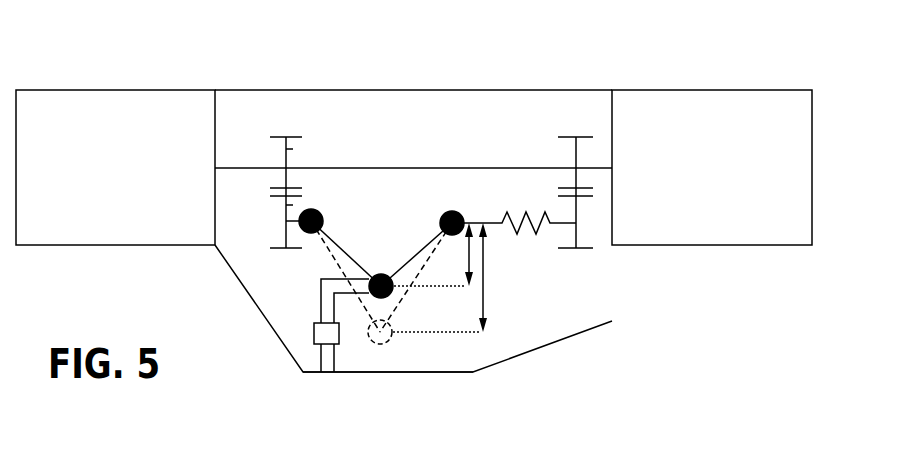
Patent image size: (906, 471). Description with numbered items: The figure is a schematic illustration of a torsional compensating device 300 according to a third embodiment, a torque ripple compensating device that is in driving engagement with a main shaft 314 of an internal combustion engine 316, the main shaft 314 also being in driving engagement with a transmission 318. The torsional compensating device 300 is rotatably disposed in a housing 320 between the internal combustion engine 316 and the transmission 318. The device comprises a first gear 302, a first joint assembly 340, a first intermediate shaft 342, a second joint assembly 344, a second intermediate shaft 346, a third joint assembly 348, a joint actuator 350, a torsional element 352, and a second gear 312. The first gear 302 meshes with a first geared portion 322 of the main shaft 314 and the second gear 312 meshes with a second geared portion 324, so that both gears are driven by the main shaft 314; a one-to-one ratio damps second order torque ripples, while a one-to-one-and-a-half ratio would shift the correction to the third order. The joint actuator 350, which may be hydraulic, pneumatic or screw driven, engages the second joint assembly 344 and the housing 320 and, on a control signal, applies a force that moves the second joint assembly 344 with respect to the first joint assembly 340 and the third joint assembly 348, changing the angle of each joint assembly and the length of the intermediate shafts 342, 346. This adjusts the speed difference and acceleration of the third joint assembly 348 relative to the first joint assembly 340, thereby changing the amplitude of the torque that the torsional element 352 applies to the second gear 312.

The torsional compensating device 300 is at (303, 387).
The first gear 302 is at (293, 205).
The second gear 312 is at (576, 233).
The main shaft 314 is at (400, 168).
The internal combustion engine 316 is at (113, 90).
The transmission 318 is at (708, 90).
The housing 320 is at (443, 374).
The first geared portion 322 is at (293, 149).
The second geared portion 324 is at (576, 153).
The first joint assembly 340 is at (323, 221).
The first intermediate shaft 342 is at (337, 248).
The second joint assembly 344 is at (381, 274).
The second intermediate shaft 346 is at (427, 248).
The third joint assembly 348 is at (451, 211).
The joint actuator 350 is at (314, 333).
The torsional element 352 is at (522, 234).